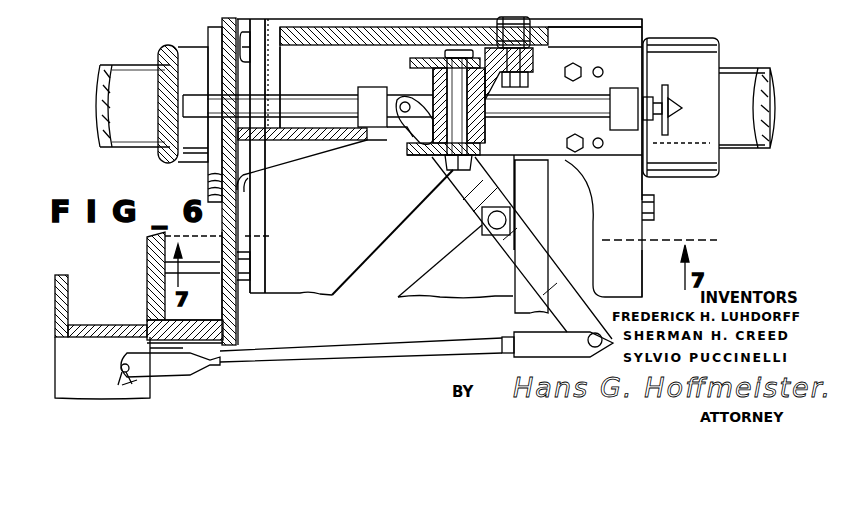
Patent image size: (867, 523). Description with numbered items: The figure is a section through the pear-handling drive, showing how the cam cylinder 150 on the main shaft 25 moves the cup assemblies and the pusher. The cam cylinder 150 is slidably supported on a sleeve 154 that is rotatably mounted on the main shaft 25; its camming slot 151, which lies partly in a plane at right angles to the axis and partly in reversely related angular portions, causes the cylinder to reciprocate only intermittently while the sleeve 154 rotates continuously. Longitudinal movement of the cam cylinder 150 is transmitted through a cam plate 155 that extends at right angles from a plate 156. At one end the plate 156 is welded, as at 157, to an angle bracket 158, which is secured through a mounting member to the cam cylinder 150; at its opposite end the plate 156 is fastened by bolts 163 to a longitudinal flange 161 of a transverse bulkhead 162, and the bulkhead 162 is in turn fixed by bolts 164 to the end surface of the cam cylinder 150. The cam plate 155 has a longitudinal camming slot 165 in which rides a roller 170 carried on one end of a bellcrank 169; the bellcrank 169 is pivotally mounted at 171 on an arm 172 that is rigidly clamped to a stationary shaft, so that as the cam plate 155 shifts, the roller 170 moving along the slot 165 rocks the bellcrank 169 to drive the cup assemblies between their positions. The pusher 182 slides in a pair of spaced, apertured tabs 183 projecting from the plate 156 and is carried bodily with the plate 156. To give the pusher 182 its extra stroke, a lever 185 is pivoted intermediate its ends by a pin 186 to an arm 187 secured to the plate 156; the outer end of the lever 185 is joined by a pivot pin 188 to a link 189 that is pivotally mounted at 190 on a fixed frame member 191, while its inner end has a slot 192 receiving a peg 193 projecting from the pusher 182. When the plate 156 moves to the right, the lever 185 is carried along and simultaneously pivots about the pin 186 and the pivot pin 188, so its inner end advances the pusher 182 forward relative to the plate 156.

The main shaft 25 is at (168, 78).
The cam cylinder 150 is at (368, 201).
The camming slot 151 is at (395, 243).
The sleeve 154 is at (205, 48).
The cam plate 155 is at (385, 12).
The plate 156 is at (625, 37).
The weld 157 is at (283, 58).
The angle bracket 158 is at (257, 72).
The longitudinal flange 161 is at (585, 160).
The transverse bulkhead 162 is at (623, 282).
The bolts 163 is at (573, 62).
The bolts 164 is at (655, 205).
The longitudinal camming slot 165 is at (492, 27).
The bellcrank 169 is at (478, 128).
The roller 170 is at (520, 28).
The pivot 171 is at (450, 168).
The arm 172 is at (410, 62).
The pusher 182 is at (672, 97).
The apertured tabs 183 is at (383, 118).
The lever 185 is at (543, 273).
The pin 186 is at (483, 223).
The arm 187 is at (488, 219).
The pivot pin 188 is at (590, 347).
The link 189 is at (380, 325).
The pivot 190 is at (148, 373).
The fixed frame member 191 is at (100, 367).
The slot 192 is at (413, 128).
The peg 193 is at (407, 100).